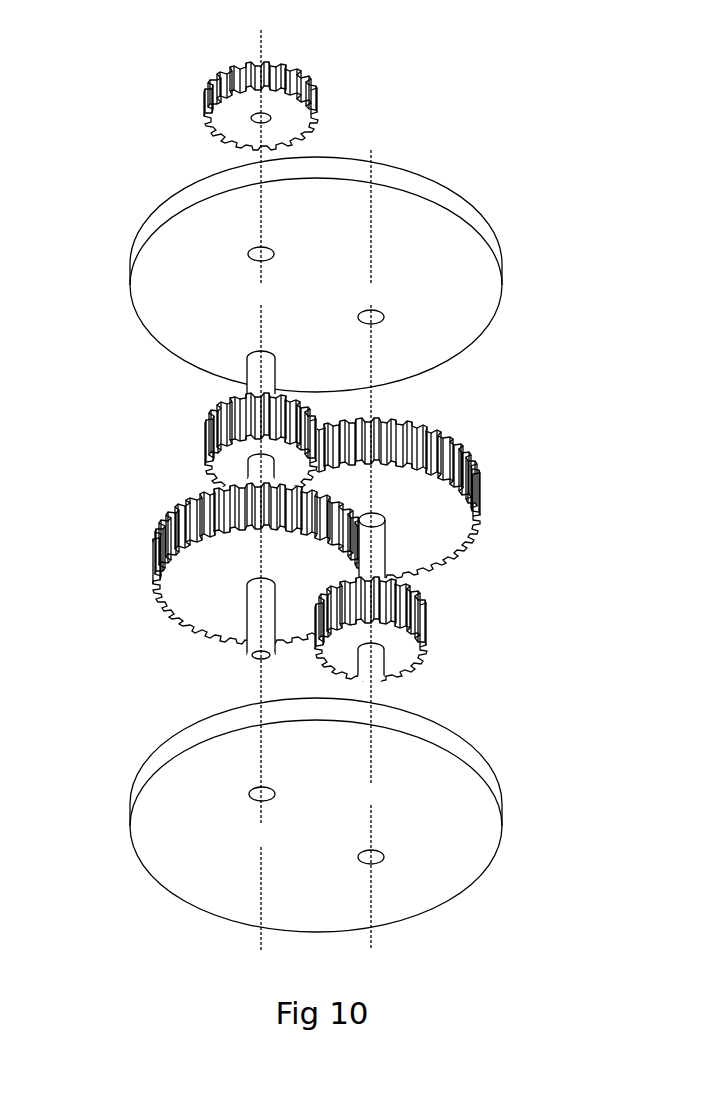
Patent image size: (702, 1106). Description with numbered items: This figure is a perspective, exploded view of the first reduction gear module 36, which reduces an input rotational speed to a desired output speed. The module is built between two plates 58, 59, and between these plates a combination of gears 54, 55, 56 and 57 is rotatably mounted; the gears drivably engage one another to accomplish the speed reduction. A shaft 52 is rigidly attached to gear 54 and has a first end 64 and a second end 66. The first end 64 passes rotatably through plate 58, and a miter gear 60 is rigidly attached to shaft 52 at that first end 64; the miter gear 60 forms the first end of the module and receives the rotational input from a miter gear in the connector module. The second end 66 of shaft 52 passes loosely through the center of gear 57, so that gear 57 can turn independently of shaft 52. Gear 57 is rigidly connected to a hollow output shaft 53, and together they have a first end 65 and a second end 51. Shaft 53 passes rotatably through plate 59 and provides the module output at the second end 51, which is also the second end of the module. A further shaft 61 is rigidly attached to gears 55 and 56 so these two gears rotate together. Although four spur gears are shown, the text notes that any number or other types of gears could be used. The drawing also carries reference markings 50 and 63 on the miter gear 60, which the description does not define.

The first reduction gear module 36 is at (313, 523).
The drive gear teeth 50 is at (260, 89).
The second end 51 is at (162, 679).
The shaft 52 is at (322, 408).
The hollow output shaft 53 is at (173, 633).
The gear 54 is at (203, 442).
The gear 55 is at (420, 493).
The gear 56 is at (414, 630).
The gear 57 is at (261, 533).
The plate 58 is at (291, 274).
The plate 59 is at (273, 815).
The miter gear 60 is at (303, 92).
The shaft 61 is at (446, 543).
The drive gear teeth 63 is at (379, 155).
The first end 64 is at (182, 315).
The first end 65 is at (210, 558).
The second end 66 is at (191, 463).